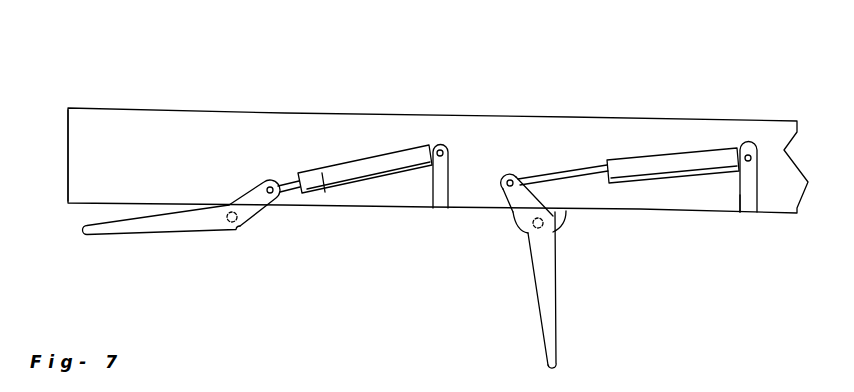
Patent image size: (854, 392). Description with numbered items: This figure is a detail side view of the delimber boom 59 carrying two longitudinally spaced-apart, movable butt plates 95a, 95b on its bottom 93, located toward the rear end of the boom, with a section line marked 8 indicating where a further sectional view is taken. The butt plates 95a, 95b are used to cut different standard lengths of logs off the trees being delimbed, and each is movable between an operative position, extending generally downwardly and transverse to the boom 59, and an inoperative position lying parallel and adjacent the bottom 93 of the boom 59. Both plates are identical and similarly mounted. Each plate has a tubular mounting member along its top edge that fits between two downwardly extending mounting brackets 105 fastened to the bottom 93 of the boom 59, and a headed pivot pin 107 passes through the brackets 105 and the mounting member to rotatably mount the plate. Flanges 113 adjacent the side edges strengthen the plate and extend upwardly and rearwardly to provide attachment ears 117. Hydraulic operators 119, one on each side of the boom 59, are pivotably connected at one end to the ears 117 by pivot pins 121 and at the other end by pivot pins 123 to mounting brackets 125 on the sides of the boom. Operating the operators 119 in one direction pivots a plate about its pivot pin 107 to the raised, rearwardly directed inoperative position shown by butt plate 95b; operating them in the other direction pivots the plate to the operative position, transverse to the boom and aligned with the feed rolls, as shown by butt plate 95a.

The delimber boom 59 is at (101, 100).
The bottom 93 is at (72, 205).
The butt plate 95a is at (558, 328).
The butt plate 95b is at (127, 237).
The mounting brackets 105 is at (247, 222).
The pivot pin 107 is at (531, 236).
The flanges 113 is at (552, 305).
The attachment ears 117 is at (512, 177).
The hydraulic operators 119 is at (338, 173).
The pivot pins 121 is at (505, 189).
The pivot pins 123 is at (750, 155).
The mounting brackets 125 is at (741, 194).
The section line 8- 8 is at (498, 44).